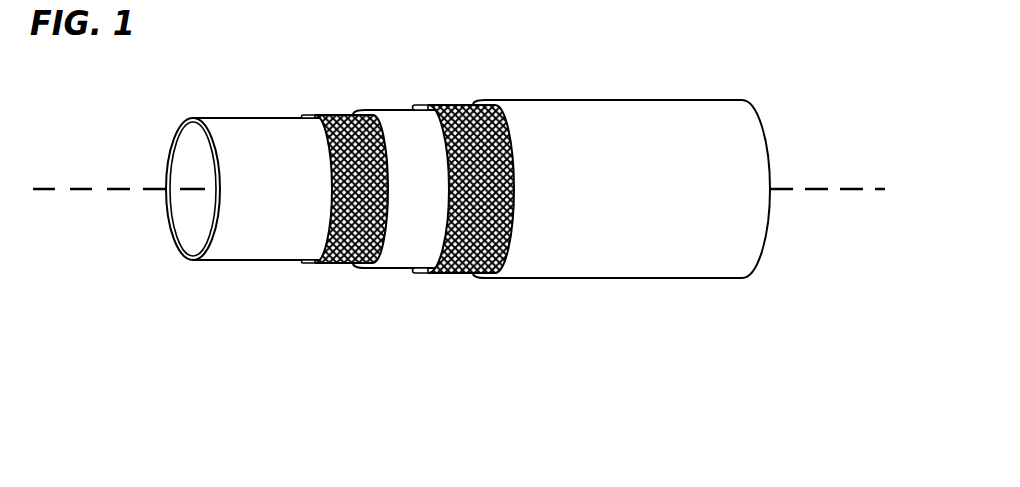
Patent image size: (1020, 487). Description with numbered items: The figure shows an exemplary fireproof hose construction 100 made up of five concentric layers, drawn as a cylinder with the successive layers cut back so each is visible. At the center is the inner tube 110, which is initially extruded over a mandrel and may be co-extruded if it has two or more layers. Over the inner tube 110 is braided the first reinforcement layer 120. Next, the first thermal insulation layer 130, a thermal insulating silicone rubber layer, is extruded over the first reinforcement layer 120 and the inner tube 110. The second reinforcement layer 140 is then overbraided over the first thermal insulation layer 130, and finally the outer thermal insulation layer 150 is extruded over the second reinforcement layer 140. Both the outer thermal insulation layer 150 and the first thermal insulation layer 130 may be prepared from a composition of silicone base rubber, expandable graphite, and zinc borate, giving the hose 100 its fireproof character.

The fireproof hose construction 100 is at (459, 209).
The inner tube 110 is at (240, 264).
The first reinforcement layer 120 is at (342, 266).
The first thermal insulation layer 130 is at (395, 270).
The second reinforcement layer 140 is at (460, 277).
The outer thermal insulation layer 150 is at (623, 292).